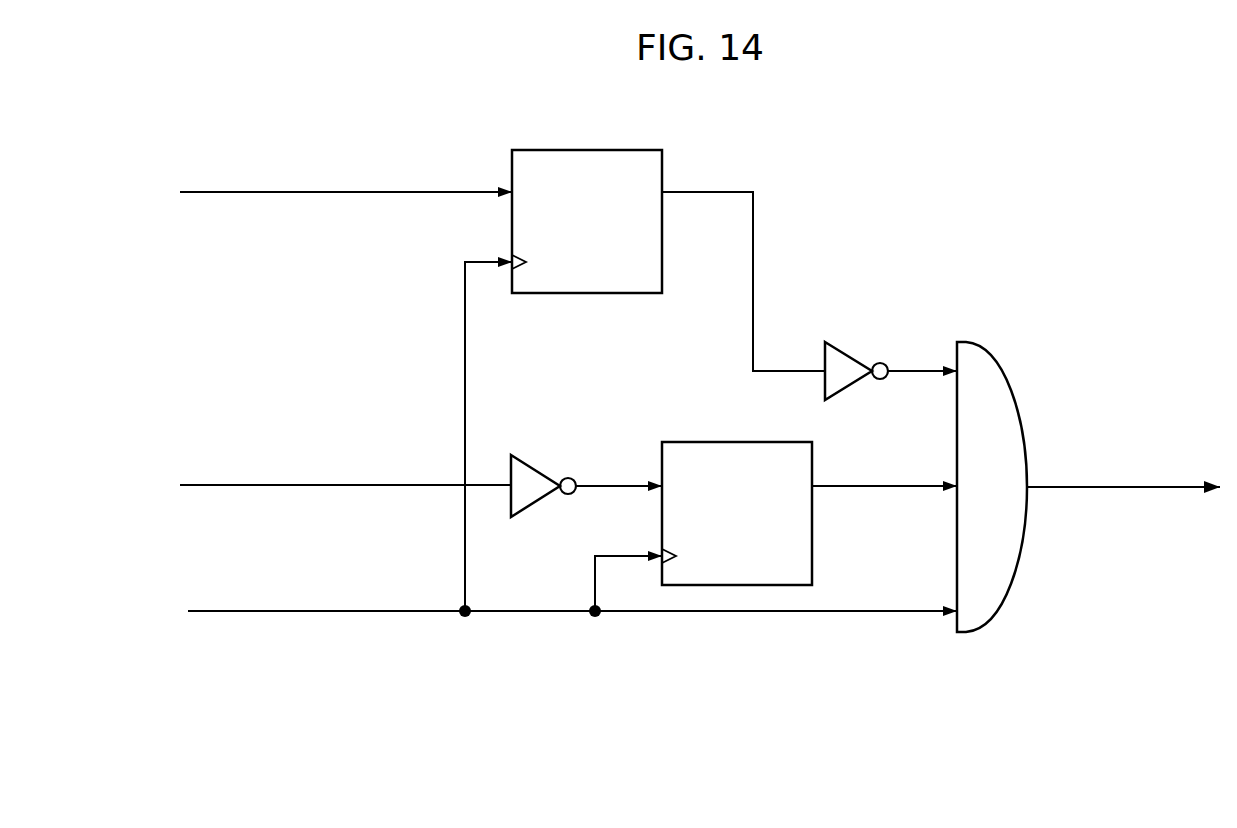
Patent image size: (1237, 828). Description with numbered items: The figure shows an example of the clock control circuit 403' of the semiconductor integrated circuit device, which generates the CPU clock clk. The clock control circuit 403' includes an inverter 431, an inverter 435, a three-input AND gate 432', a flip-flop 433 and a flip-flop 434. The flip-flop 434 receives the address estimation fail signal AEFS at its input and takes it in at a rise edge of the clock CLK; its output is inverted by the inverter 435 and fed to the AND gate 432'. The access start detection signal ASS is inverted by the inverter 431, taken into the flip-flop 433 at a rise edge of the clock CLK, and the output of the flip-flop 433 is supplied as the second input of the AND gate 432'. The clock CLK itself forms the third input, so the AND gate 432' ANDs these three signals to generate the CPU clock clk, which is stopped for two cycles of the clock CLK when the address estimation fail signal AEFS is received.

The clock control circuit 403' is at (700, 377).
The flip-flop 434 is at (662, 167).
The flip-flop 433 is at (813, 462).
The inverter 435 is at (843, 348).
The inverter 431 is at (532, 463).
The 3-input AND gate 432' is at (1017, 487).